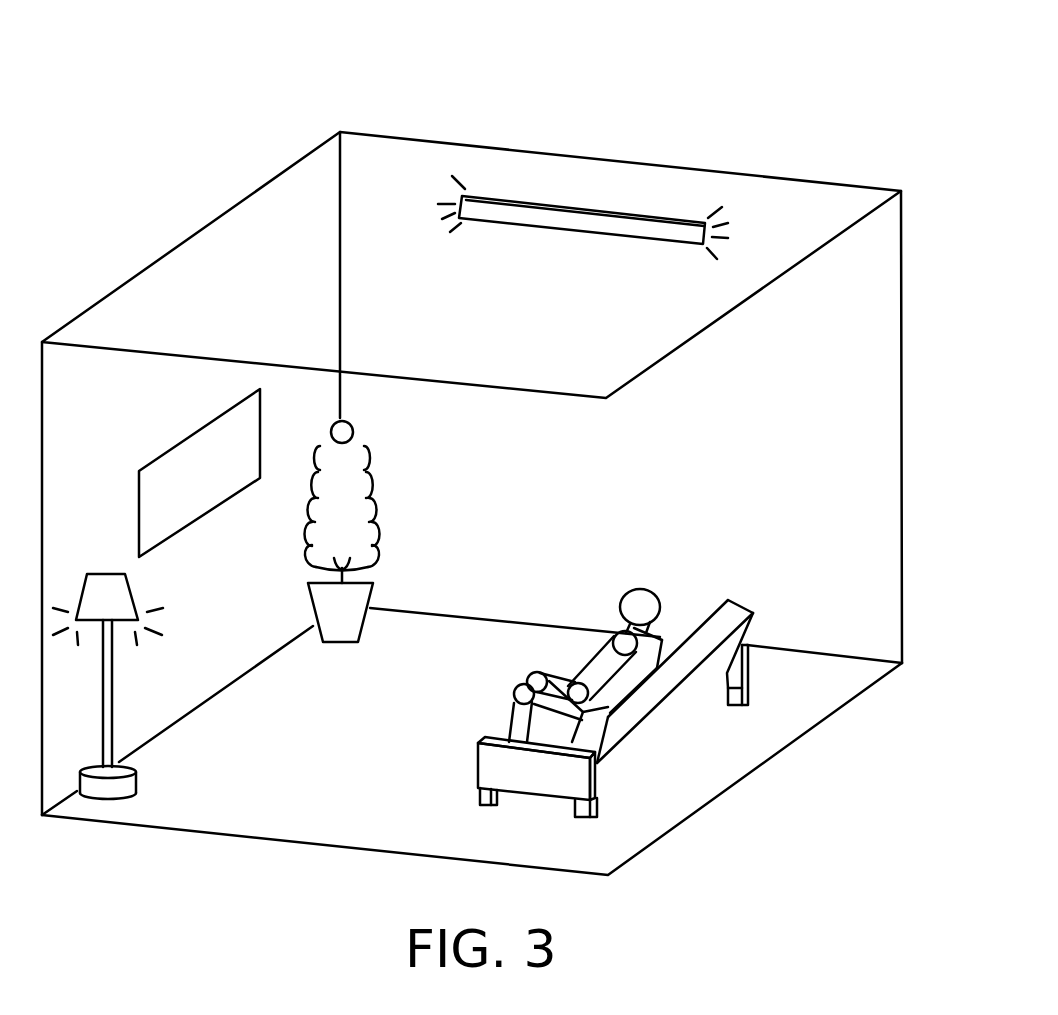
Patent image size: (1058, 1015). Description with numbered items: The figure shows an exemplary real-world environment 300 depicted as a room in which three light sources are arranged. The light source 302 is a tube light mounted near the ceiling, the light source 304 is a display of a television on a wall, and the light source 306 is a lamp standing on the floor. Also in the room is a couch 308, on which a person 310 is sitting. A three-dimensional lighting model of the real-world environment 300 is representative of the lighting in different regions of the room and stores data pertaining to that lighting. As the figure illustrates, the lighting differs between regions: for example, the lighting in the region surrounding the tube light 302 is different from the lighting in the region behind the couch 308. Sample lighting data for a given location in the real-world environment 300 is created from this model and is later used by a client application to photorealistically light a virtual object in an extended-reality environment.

The real-world environment 300 is at (811, 81).
The light source 302 is at (598, 182).
The light source 304 is at (171, 473).
The light source 306 is at (108, 658).
The couch 308 is at (647, 680).
The person 310 is at (614, 636).